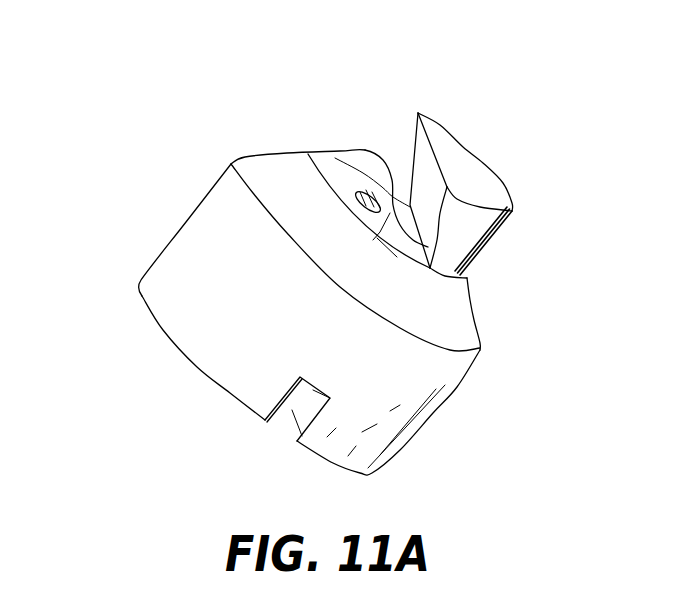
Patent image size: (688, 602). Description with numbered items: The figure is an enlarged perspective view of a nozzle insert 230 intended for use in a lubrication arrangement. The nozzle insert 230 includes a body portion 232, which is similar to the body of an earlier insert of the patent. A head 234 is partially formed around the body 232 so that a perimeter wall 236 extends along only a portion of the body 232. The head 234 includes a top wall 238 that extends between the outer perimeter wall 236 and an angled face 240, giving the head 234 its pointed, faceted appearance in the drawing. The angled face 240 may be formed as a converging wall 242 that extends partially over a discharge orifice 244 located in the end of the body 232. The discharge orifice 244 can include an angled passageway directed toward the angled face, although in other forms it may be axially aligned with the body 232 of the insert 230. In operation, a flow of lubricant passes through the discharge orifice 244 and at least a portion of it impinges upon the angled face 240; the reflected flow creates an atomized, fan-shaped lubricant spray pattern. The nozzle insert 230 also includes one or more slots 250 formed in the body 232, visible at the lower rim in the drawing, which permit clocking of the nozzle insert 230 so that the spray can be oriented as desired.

The nozzle insert 230 is at (320, 267).
The body portion 232 is at (200, 223).
The head 234 is at (476, 260).
The perimeter wall 236 is at (500, 231).
The top wall 238 is at (460, 157).
The angled face 240 is at (427, 182).
The converging wall 242 is at (408, 155).
The discharge orifice 244 is at (362, 150).
The slot 250 is at (290, 413).